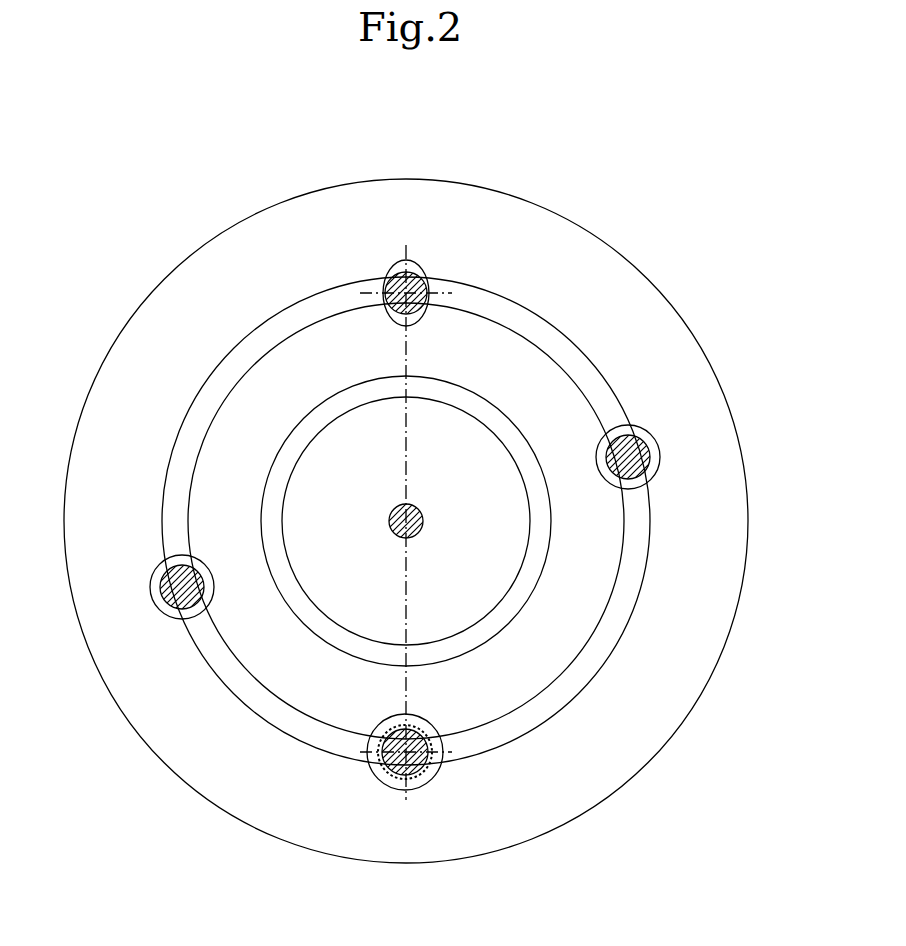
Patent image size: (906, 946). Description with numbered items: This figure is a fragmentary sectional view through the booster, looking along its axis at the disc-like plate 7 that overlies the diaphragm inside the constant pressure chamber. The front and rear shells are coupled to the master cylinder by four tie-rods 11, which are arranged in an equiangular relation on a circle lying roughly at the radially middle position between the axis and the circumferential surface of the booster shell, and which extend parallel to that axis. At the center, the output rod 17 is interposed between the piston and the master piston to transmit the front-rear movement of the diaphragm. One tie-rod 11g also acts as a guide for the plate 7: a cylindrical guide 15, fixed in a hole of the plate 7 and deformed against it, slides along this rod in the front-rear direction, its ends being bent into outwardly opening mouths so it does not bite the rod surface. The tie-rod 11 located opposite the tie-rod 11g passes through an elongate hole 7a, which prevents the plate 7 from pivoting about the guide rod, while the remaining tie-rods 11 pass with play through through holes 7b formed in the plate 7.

The plate 7 is at (117, 397).
The elongate hole 7a is at (387, 263).
The through holes 7b is at (658, 438).
The tie-rods 11 is at (417, 277).
The tie-rod also acting as guide 11g is at (397, 776).
The cylindrical guide 15 is at (399, 780).
The output rod 17 is at (392, 514).